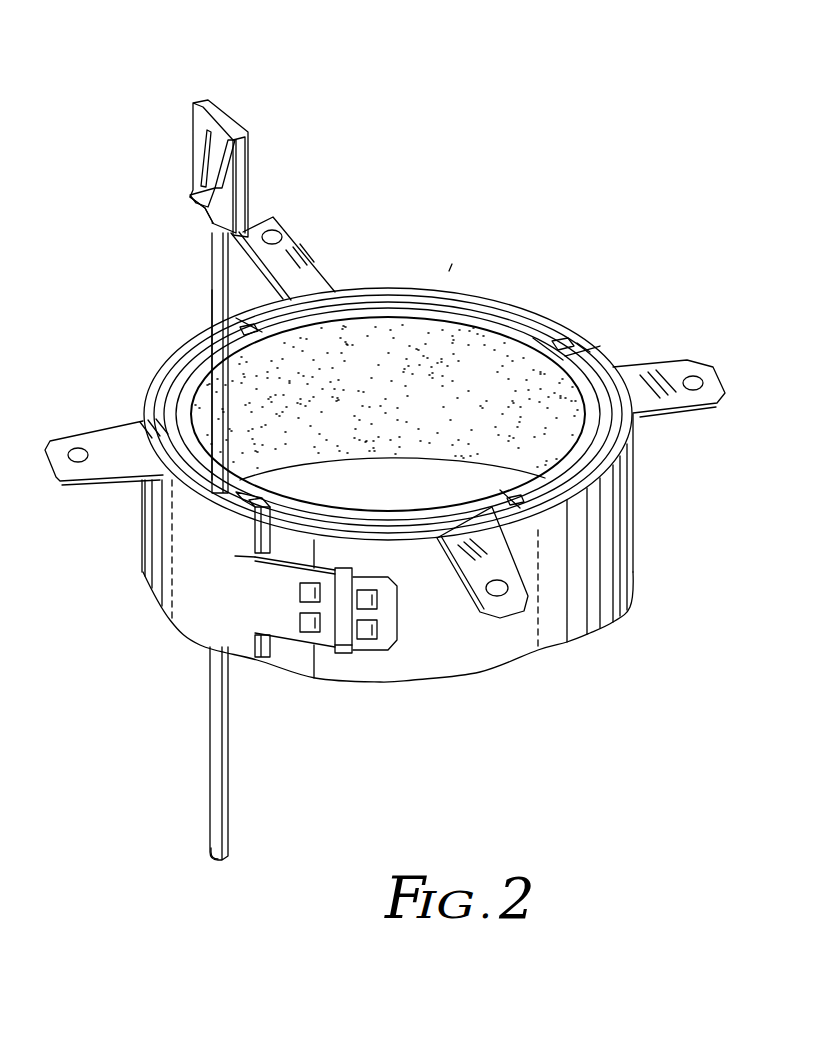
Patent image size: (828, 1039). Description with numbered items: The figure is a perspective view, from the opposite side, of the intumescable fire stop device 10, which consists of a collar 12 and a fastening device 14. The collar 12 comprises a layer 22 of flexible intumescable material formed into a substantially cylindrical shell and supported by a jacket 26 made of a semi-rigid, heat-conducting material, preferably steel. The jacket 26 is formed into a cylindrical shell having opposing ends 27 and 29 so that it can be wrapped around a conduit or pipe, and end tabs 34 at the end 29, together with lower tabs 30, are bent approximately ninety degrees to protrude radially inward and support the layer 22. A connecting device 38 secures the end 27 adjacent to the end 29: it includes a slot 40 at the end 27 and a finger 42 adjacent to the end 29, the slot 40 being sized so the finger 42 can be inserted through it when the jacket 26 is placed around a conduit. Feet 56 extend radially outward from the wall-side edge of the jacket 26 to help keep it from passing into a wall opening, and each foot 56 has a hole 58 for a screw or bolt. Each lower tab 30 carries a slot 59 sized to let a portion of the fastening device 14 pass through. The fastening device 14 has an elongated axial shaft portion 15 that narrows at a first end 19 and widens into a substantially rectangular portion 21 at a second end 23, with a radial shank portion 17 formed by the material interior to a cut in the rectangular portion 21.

The fire stop device 10 is at (449, 271).
The collar 12 is at (485, 298).
The fastening device 14 is at (213, 265).
The elongated axial shaft portion 15 is at (210, 298).
The radial shank portion 17 is at (205, 178).
The first end 19 is at (217, 862).
The substantially rectangular portion 21 is at (233, 110).
The layer of flexible intumescable material 22 is at (440, 447).
The second end 23 is at (190, 228).
The jacket 26 is at (592, 605).
The end 27 is at (315, 683).
The end 29 is at (262, 662).
The lower tab 30 is at (580, 343).
The end tab 34 is at (270, 522).
The connecting device 38 is at (345, 578).
The slot 40 is at (346, 657).
The finger 42 is at (402, 634).
The foot 56 is at (703, 405).
The hole 58 is at (693, 377).
The slot 59 is at (560, 340).